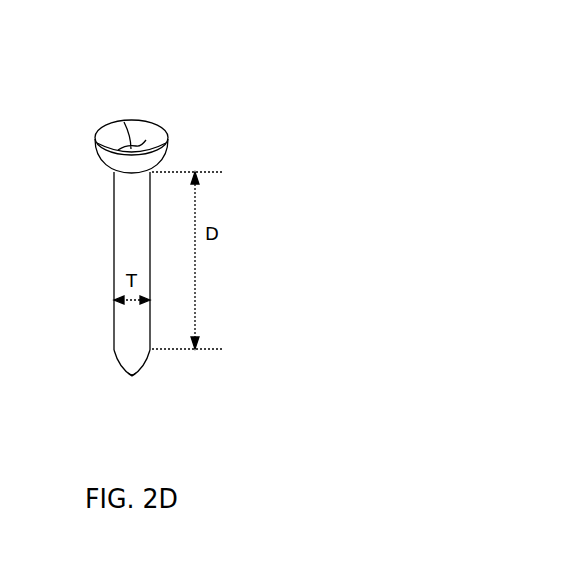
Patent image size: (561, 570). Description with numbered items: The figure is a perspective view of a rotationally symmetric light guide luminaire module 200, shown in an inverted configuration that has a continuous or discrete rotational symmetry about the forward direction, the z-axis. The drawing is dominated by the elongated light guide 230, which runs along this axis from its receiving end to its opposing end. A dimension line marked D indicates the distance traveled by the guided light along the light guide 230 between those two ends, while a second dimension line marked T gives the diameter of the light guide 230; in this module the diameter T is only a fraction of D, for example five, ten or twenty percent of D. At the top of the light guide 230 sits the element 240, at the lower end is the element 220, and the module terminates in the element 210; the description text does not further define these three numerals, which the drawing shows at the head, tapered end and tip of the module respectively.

The luminaire module 200 is at (242, 68).
The head 240 is at (168, 143).
The light guide 230 is at (114, 237).
The tapered end portion 220 is at (116, 361).
The tip 210 is at (131, 377).